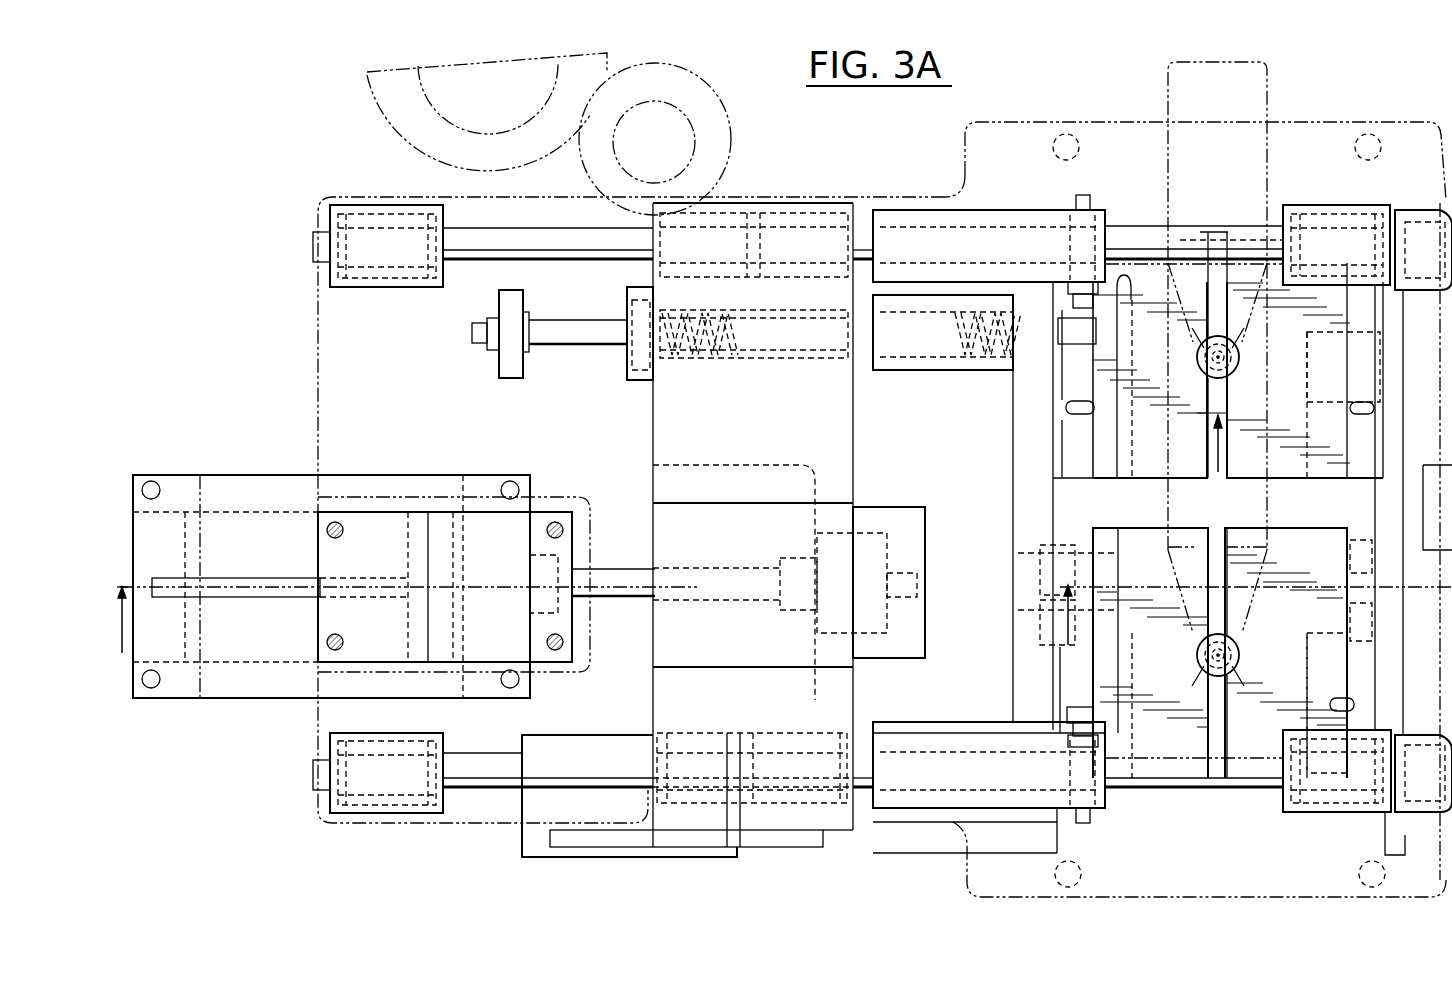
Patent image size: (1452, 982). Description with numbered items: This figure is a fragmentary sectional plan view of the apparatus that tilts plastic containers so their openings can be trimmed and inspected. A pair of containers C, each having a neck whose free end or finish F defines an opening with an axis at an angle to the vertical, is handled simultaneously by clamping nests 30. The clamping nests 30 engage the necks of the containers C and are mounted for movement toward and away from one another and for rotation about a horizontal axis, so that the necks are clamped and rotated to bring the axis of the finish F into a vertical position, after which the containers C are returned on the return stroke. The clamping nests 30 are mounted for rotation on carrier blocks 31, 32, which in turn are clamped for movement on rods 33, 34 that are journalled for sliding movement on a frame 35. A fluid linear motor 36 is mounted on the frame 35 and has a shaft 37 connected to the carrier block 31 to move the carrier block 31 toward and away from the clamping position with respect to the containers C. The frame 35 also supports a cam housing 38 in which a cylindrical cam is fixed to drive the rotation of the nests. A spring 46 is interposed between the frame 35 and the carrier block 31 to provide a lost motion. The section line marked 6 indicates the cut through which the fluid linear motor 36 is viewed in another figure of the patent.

The clamping nest 30 is at (1192, 470).
The carrier block 31 is at (1026, 665).
The carrier block 32 is at (1388, 855).
The rod 33 is at (478, 762).
The rod 34 is at (546, 238).
The frame 35 is at (962, 170).
The fluid linear motor 36 is at (480, 520).
The shaft 37 is at (632, 598).
The cam housing 38 is at (775, 820).
The spring 46 is at (718, 358).
The section line 6 is at (597, 637).
The container C is at (1268, 108).
The finish F is at (1220, 380).